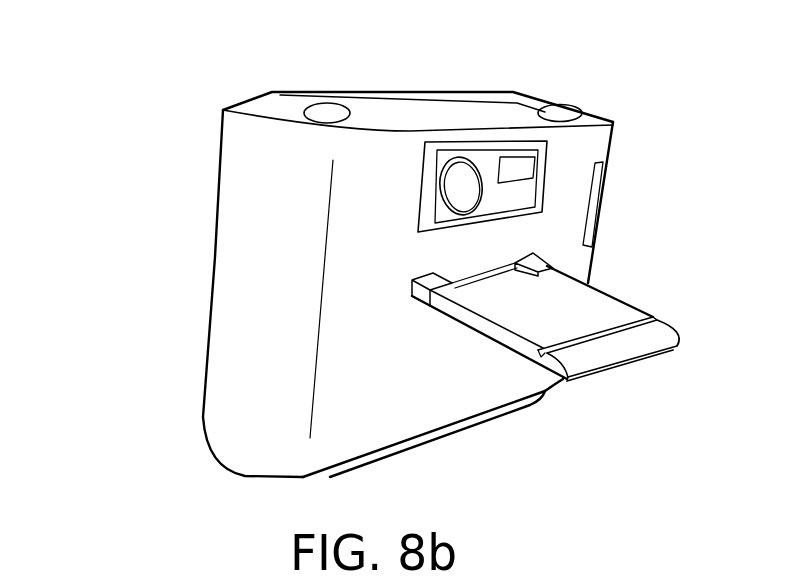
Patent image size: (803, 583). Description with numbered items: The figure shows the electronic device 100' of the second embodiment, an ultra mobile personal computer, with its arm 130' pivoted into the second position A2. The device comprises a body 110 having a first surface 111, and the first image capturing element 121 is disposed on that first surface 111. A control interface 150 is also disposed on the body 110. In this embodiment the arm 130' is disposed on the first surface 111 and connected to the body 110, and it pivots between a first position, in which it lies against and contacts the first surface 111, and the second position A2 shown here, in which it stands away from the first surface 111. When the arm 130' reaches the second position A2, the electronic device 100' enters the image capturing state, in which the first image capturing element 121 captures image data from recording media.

The electronic device 100' is at (95, 24).
The body 110 is at (213, 257).
The first surface 111 is at (482, 378).
The first image capturing element 121 is at (465, 183).
The arm 130' is at (545, 302).
The control interface 150 is at (323, 113).
The second position A2 is at (623, 365).